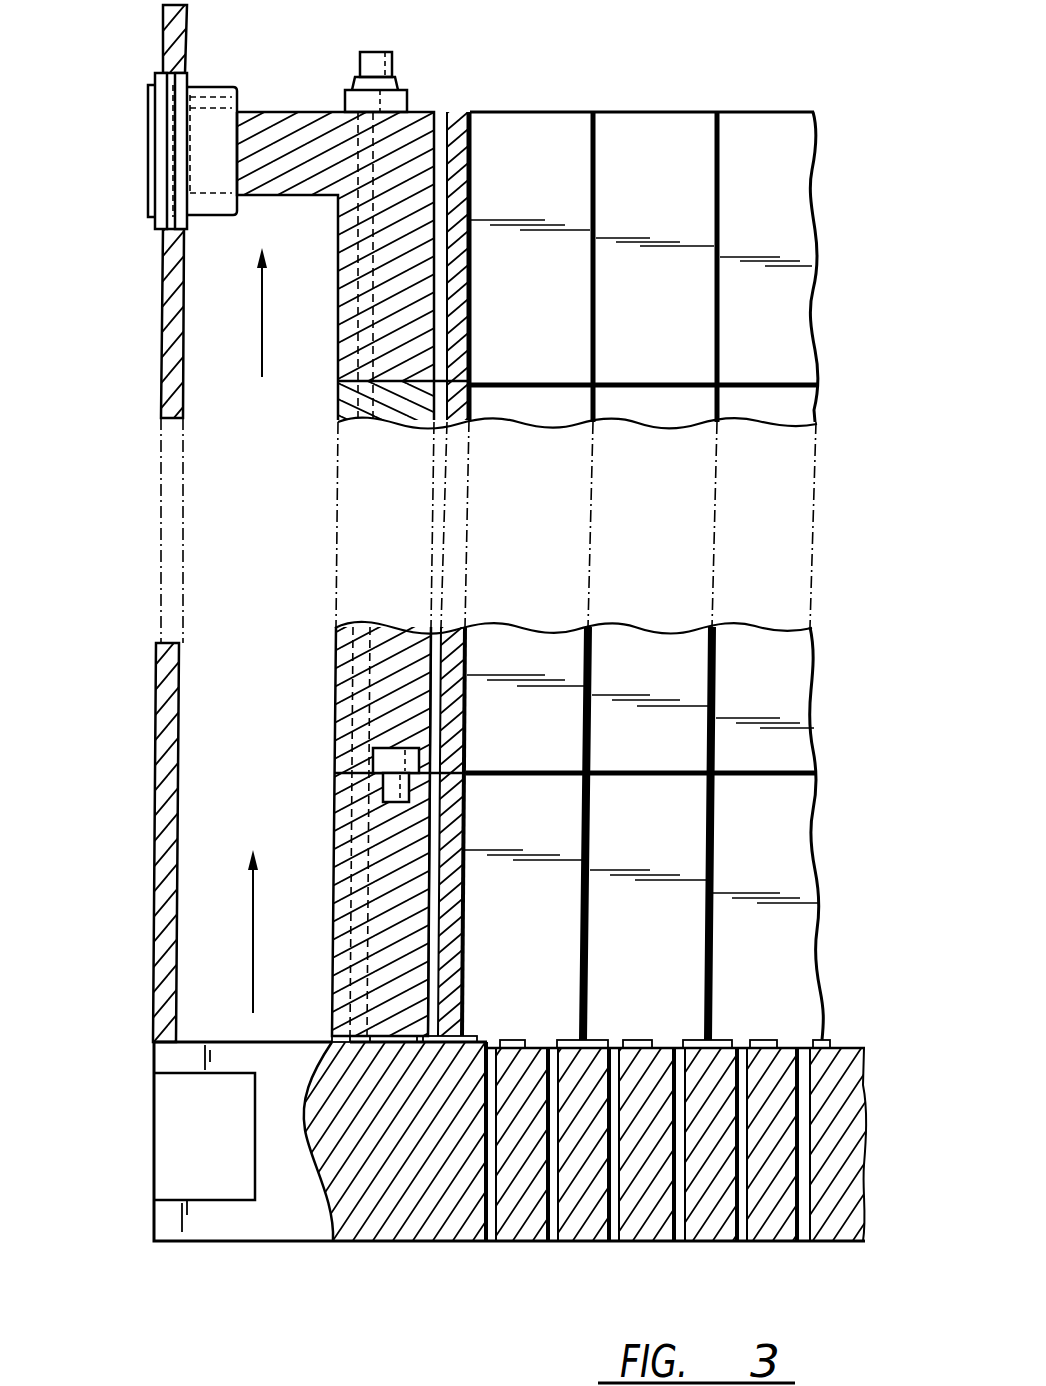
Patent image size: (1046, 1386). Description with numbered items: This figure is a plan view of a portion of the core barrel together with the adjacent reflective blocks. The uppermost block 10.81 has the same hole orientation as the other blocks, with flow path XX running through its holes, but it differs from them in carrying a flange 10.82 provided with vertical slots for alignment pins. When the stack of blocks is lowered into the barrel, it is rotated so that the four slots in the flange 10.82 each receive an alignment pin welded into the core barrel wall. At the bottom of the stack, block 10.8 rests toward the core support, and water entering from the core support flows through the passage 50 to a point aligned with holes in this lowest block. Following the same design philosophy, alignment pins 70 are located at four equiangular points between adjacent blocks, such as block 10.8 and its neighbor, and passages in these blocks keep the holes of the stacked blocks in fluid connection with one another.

The flow path XX is at (168, 372).
The flange 10.82 is at (306, 112).
The uppermost block 10.81 is at (473, 172).
The block 10.8 is at (644, 544).
The passage 50 is at (413, 95).
The alignment pin 70 is at (378, 758).